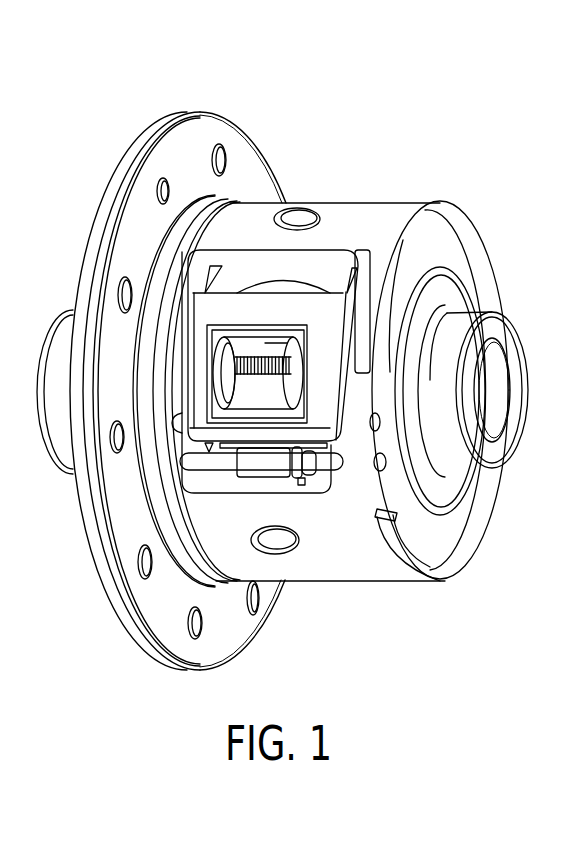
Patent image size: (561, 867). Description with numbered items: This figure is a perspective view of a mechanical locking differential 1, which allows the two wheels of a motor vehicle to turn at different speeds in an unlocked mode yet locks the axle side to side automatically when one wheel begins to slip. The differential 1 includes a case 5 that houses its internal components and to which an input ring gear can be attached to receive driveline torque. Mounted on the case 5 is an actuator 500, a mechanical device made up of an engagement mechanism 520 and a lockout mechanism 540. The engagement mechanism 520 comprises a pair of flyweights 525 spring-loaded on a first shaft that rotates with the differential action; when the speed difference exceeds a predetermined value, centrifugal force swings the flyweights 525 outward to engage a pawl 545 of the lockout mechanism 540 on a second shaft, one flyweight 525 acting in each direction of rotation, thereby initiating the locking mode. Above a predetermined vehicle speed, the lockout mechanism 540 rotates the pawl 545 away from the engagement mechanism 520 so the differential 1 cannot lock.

The mechanical locking differential 1 is at (430, 93).
The case 5 is at (250, 224).
The actuator 500 is at (181, 443).
The engagement mechanism 520 is at (298, 358).
The flyweights 525 is at (305, 334).
The lockout mechanism 540 is at (330, 465).
The pawl 545 is at (275, 463).